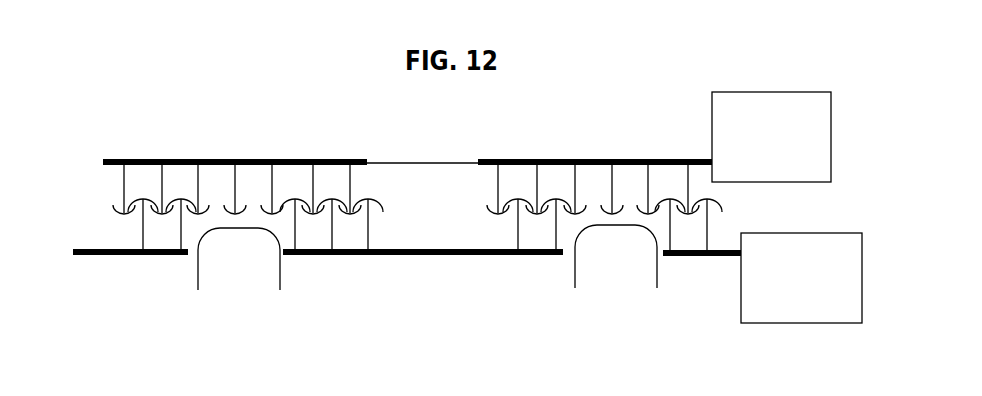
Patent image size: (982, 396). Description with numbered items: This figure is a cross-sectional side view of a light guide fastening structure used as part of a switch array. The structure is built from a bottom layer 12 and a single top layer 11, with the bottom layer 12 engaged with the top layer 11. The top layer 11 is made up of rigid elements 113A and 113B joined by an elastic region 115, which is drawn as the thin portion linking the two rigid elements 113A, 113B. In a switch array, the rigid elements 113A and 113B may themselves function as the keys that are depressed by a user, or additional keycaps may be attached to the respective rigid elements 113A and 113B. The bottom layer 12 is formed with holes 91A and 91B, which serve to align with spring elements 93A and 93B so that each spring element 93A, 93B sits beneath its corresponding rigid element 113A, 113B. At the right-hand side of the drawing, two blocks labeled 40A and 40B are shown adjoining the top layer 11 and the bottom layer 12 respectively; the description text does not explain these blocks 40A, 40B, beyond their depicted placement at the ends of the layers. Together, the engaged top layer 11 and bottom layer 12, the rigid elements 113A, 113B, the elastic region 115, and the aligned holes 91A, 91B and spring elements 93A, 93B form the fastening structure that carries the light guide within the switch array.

The top layer 11 is at (103, 162).
The bottom layer 12 is at (105, 255).
The rigid element 113A is at (178, 160).
The rigid element 113B is at (553, 162).
The elastic region 115 is at (425, 150).
The hole 91A is at (290, 263).
The hole 91B is at (661, 265).
The spring element 93A is at (198, 270).
The spring element 93B is at (575, 280).
The first light source 40A is at (753, 171).
The second light source 40B is at (783, 312).